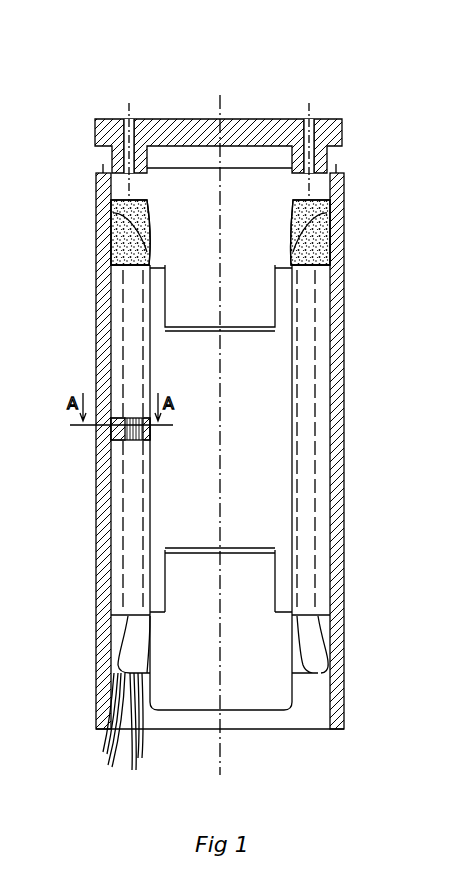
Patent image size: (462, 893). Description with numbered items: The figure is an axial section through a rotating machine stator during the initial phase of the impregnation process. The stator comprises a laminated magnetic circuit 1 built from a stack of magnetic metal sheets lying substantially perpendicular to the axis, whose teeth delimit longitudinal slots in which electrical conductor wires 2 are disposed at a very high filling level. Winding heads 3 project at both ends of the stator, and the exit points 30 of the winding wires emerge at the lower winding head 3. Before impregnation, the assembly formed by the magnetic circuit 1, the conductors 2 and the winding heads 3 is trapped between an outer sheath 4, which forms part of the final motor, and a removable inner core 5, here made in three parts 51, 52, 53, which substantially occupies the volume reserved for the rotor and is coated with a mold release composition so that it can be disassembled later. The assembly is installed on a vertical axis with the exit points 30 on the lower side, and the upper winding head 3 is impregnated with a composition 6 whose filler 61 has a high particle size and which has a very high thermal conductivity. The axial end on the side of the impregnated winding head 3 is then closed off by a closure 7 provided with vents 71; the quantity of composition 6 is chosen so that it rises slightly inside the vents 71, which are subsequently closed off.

The laminated magnetic circuit 1 is at (100, 392).
The electrical conductor wires 2 is at (130, 417).
The winding heads 3 is at (110, 213).
The exit points of wires 30 is at (120, 712).
The outer sheath 4 is at (97, 488).
The removable inner core 5 is at (291, 533).
The first core part 51 is at (255, 297).
The second core part 52 is at (253, 453).
The third core part 53 is at (260, 645).
The composition for impregnating winding heads 6 is at (295, 200).
The filler 61 is at (343, 226).
The closure 7 is at (253, 130).
The vents 71 is at (123, 120).